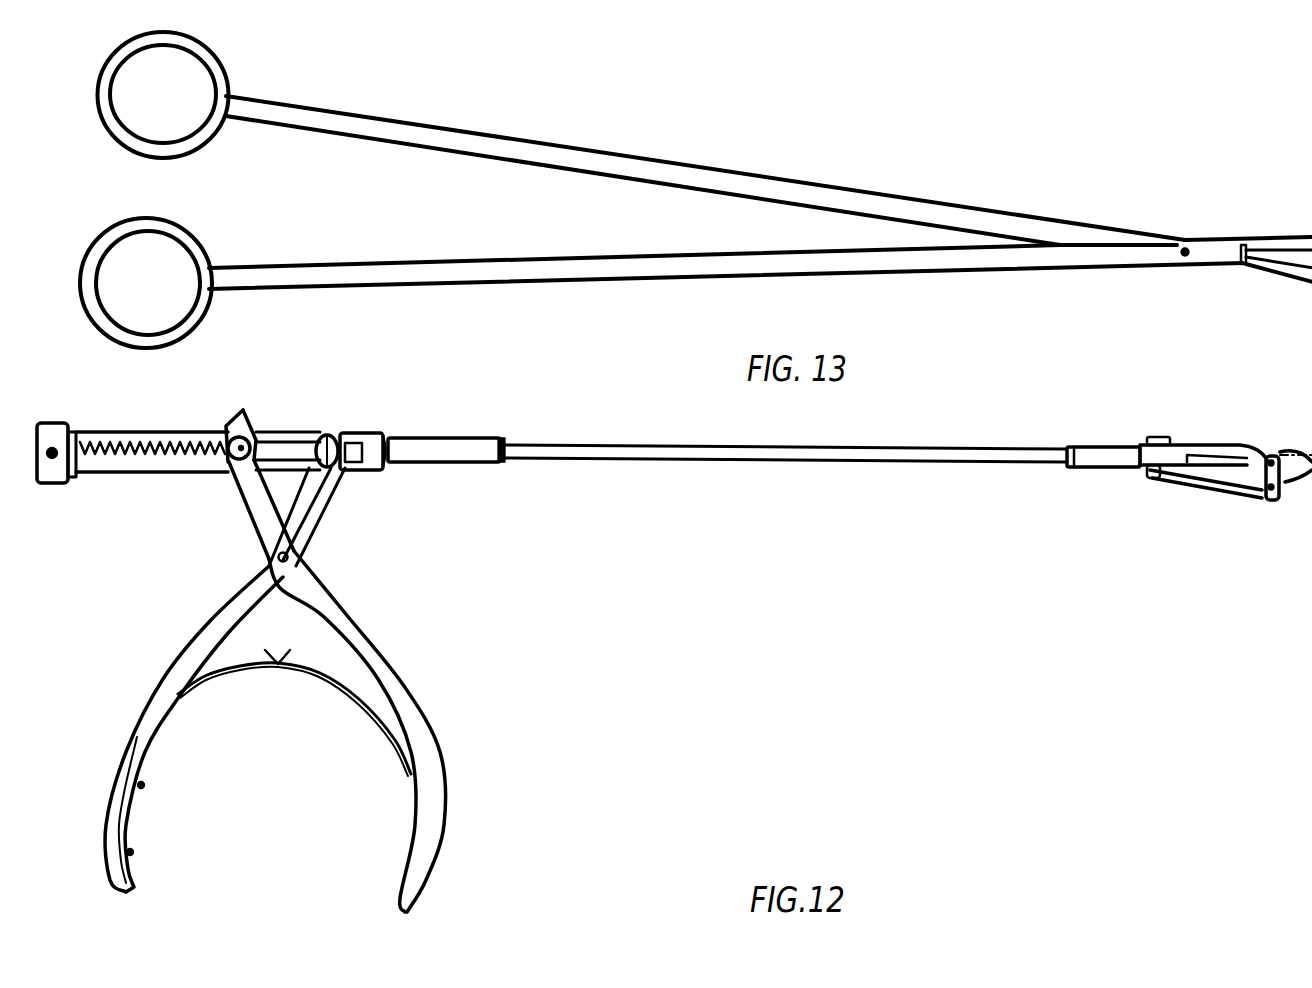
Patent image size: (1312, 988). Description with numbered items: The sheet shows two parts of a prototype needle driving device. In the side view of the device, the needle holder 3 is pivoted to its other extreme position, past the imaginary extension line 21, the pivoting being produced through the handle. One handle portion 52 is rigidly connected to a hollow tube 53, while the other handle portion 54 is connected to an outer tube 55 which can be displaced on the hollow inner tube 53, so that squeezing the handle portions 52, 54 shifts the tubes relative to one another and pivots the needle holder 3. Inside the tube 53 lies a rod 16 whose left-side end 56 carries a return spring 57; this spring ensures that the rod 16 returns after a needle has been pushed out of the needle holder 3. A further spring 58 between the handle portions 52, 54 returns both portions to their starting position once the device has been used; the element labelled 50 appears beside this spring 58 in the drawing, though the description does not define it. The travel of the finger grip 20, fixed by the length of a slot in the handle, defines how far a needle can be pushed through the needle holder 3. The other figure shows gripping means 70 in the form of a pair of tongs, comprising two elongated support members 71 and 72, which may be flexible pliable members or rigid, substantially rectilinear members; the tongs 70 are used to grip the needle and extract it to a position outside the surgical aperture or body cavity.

In FIG. 13, the gripping means 70 is at (1000, 190).
In FIG. 13, the elongated support member 71 is at (558, 153).
In FIG. 13, the elongated support member 72 is at (677, 266).
In FIG. 12, the finger grip 20 is at (58, 423).
In FIG. 12, the left-side end of the rod 56 is at (115, 442).
In FIG. 12, the return spring 57 is at (148, 462).
In FIG. 12, the rod 16 is at (200, 437).
In FIG. 12, the hollow tube 53 is at (290, 437).
In FIG. 12, the outer tube 55 is at (447, 447).
In FIG. 12, the imaginary extension 21 is at (1281, 450).
In FIG. 12, the needle holder 3 is at (1304, 482).
In FIG. 12, the handle portion 54 is at (165, 642).
In FIG. 12, the handle portion 52 is at (440, 722).
In FIG. 12, the handle assembly 50 is at (305, 651).
In FIG. 12, the spring 58 is at (312, 682).